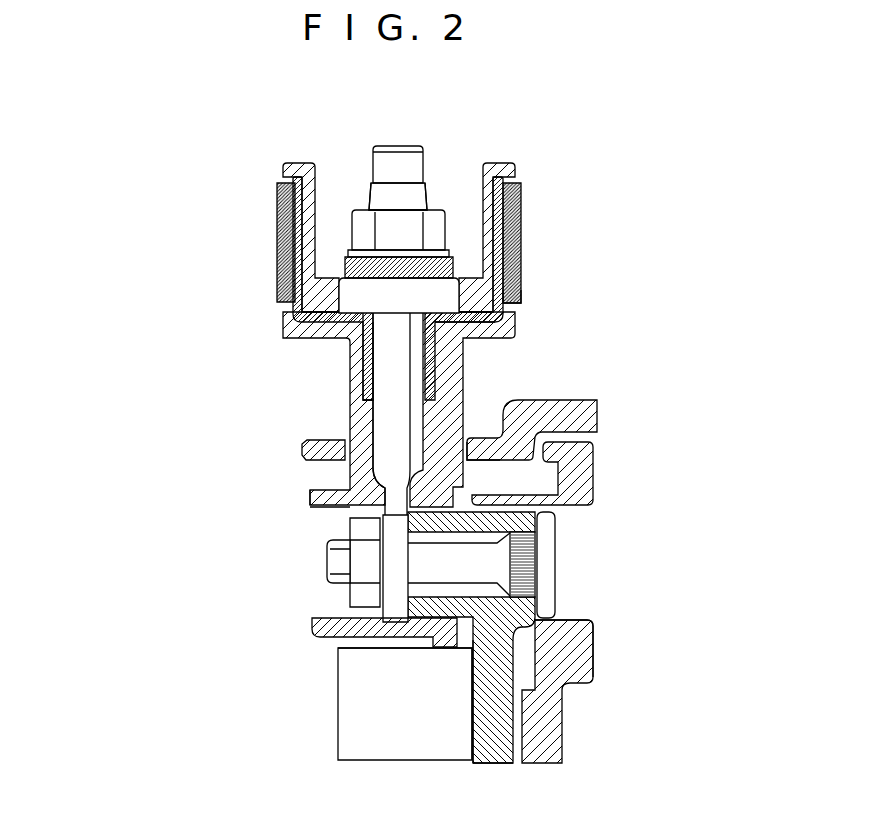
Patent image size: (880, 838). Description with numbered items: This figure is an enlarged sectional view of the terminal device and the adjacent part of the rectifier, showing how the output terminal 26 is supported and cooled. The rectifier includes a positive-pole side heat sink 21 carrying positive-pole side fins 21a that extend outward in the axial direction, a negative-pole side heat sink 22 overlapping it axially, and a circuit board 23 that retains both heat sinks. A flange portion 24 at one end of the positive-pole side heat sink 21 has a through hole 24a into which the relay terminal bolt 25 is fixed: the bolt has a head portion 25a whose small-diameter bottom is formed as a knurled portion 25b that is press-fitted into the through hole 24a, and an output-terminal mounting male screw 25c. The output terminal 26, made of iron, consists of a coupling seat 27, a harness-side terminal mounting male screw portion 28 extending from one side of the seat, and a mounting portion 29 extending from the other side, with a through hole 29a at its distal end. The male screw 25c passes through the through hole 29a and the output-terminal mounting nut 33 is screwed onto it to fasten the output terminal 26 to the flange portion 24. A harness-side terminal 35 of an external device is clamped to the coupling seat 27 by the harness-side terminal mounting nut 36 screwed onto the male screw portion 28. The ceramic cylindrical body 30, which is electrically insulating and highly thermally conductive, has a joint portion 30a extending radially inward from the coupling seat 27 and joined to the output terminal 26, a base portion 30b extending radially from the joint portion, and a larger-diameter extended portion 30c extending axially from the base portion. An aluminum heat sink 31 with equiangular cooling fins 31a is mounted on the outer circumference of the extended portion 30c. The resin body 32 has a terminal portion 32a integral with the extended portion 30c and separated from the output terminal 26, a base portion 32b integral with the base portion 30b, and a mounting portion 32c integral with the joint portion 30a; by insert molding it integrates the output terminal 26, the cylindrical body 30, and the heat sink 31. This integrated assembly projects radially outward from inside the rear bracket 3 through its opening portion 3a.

The rear bracket 3 is at (560, 418).
The opening portion 3a is at (455, 437).
The positive-pole side heat sink 21 is at (558, 750).
The positive-pole side fins 21a is at (447, 750).
The negative-pole side heat sink 22 is at (456, 648).
The circuit board 23 is at (578, 647).
The flange portion 24 is at (530, 660).
The through hole 24a is at (475, 680).
The relay terminal bolt 25 is at (555, 530).
The head portion 25a is at (541, 588).
The knurled portion 25b is at (525, 572).
The output-terminal mounting male screw 25c is at (332, 552).
The output terminal 26 is at (407, 165).
The coupling seat 27 is at (303, 319).
The harness-side terminal mounting male screw portion 28 is at (370, 207).
The mounting portion 29 is at (395, 517).
The through hole 29a is at (410, 620).
The cylindrical body 30 is at (300, 168).
The joint portion 30a is at (363, 392).
The base portion 30b is at (480, 336).
The extended portion 30c is at (518, 268).
The heat sink 31 is at (520, 212).
The cooling fins 31a is at (520, 295).
The resin body 32 is at (500, 163).
The terminal portion 32a is at (283, 223).
The base portion 32b is at (338, 330).
The mounting portion 32c is at (312, 505).
The output-terminal mounting nut 33 is at (362, 597).
The harness-side terminal 35 is at (358, 300).
The harness-side terminal mounting nut 36 is at (440, 232).